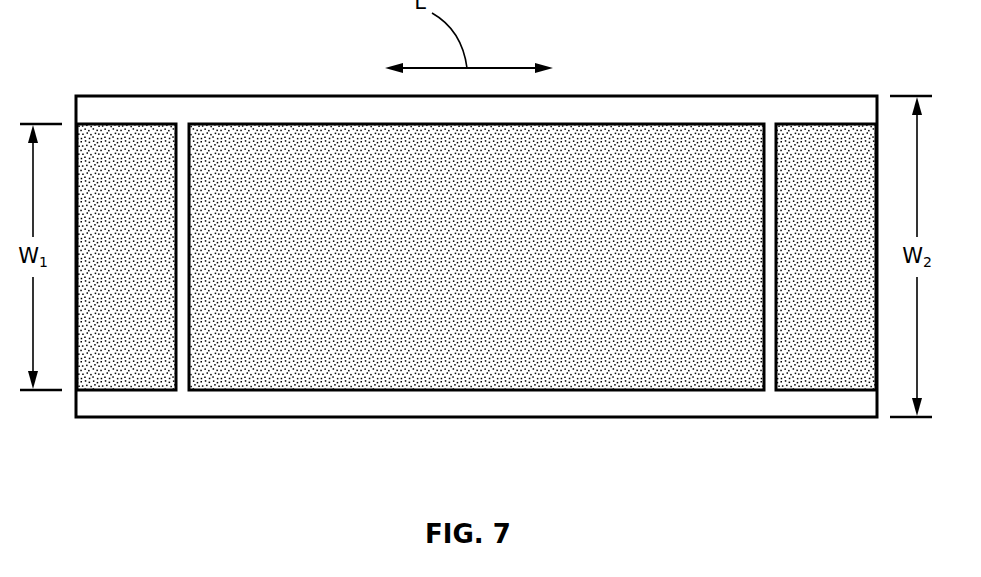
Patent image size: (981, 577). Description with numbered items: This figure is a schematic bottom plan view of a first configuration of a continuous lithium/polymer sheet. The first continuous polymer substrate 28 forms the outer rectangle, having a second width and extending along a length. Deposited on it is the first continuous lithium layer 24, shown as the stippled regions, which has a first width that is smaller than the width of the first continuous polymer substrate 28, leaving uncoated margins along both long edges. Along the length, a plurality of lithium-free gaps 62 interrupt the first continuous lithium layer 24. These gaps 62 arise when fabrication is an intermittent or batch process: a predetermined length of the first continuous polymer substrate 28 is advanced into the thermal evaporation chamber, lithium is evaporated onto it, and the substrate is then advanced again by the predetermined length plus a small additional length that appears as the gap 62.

The first continuous lithium layer 24 is at (112, 268).
The first continuous polymer substrate 28 is at (645, 108).
The lithium-free gap 62 is at (184, 135).